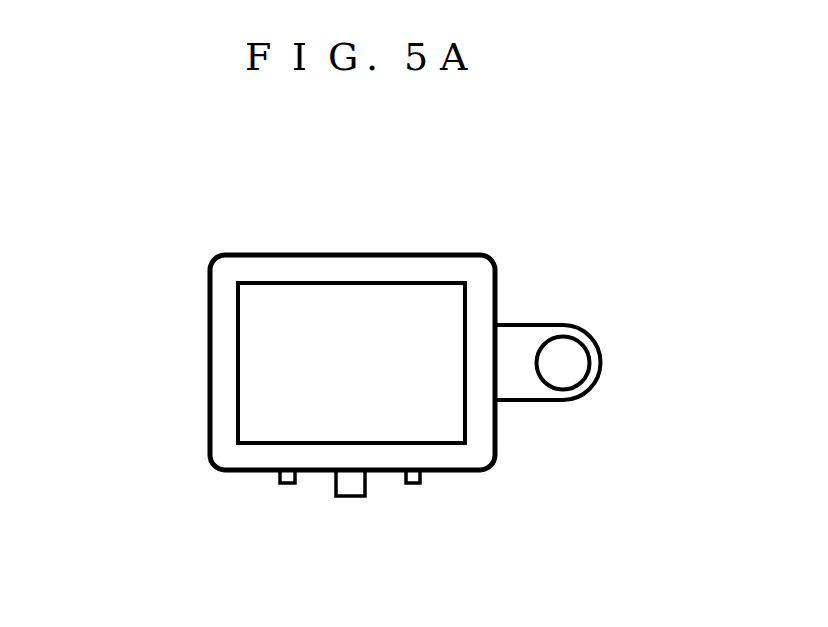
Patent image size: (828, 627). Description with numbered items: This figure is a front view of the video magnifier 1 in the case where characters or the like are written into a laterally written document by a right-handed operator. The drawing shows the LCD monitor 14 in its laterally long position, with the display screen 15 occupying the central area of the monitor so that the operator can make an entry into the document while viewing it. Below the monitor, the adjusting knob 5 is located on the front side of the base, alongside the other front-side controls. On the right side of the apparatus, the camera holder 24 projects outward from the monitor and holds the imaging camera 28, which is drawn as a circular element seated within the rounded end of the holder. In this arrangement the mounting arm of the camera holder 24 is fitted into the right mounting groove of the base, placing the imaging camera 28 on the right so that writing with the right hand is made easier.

The video magnifier 1 is at (381, 336).
The LCD monitor 14 is at (226, 336).
The display screen 15 is at (260, 388).
The adjusting knob 5 is at (357, 497).
The camera holder 24 is at (565, 405).
The imaging camera 28 is at (589, 338).